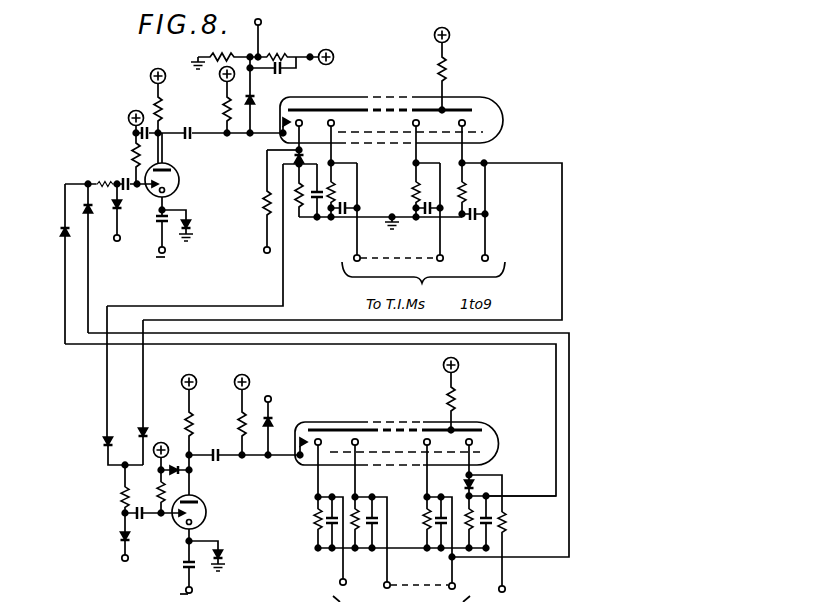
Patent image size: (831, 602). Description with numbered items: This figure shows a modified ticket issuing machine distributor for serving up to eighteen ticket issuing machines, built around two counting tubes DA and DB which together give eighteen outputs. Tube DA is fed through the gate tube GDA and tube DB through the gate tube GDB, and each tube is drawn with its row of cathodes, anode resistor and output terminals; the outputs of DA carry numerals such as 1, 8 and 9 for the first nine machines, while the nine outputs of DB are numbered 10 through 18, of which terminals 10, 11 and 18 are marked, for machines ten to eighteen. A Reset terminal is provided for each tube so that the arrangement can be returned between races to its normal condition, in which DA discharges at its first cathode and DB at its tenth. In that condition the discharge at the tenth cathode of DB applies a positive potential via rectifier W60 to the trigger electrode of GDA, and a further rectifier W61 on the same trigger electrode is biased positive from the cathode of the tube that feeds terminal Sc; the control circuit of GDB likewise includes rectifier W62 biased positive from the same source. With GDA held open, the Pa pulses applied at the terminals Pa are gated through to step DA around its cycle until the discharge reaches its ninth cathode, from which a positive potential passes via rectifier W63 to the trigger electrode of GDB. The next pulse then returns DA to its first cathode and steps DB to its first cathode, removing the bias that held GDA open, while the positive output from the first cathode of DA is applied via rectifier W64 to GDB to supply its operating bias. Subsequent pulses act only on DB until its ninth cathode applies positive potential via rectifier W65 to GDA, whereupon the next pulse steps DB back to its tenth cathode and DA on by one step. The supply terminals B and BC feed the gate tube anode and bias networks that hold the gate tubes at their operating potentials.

The tube DA is at (403, 117).
The tube DB is at (398, 428).
The gate tube GDA is at (181, 180).
The gate tube GDB is at (208, 512).
The rectifier W60 is at (42, 264).
The rectifier W61 is at (129, 209).
The rectifier W62 is at (105, 510).
The rectifier W63 is at (172, 458).
The rectifier W64 is at (104, 446).
The rectifier W65 is at (82, 212).
The supply terminal B is at (129, 120).
The bias/control terminal BC is at (276, 235).
The signal terminal Sc is at (120, 409).
The Pa pulses Pa is at (185, 404).
The reset terminal Reset is at (389, 376).
The output 1 is at (354, 275).
The output 8 is at (440, 275).
The output 9 is at (483, 275).
The output 10 is at (325, 590).
The output 11 is at (372, 592).
The output 18 is at (463, 587).